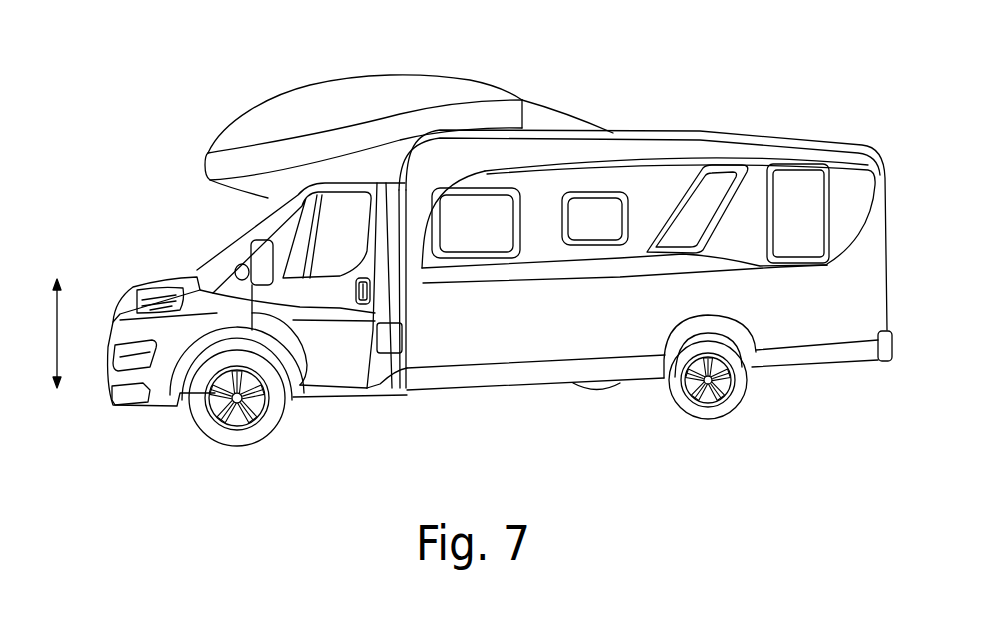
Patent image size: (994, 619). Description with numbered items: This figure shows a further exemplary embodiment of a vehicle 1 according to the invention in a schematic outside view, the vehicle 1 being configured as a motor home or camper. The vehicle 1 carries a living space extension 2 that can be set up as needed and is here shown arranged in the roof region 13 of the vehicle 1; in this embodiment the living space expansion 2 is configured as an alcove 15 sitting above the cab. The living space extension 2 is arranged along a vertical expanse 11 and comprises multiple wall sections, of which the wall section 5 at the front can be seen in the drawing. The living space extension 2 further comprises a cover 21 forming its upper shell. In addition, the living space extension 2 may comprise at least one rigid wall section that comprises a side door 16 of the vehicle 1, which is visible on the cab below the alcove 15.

The vehicle 1 is at (142, 100).
The living space extension 2 is at (391, 92).
The cover 21 is at (307, 88).
The wall section 5 is at (223, 167).
The alcove 15 is at (522, 73).
The vertical expanse 11 is at (62, 352).
The roof region 13 is at (378, 186).
The side door 16 is at (343, 308).